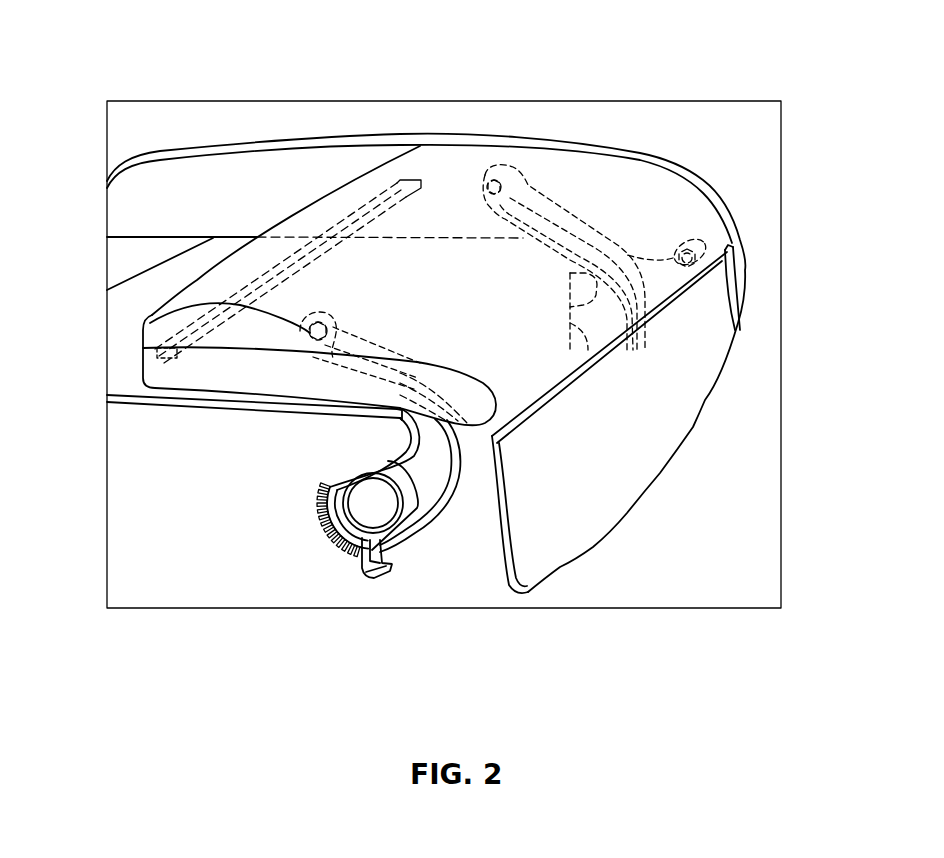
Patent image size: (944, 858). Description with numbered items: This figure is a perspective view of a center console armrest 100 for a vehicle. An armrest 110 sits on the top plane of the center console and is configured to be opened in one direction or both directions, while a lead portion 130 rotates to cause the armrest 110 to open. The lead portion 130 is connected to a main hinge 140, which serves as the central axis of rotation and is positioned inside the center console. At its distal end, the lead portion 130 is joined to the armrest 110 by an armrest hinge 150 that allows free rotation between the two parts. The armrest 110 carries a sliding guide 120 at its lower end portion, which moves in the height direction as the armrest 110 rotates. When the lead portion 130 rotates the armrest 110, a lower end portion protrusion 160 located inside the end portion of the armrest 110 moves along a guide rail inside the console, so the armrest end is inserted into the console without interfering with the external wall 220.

The center console armrest 100 is at (286, 84).
The armrest 110 is at (445, 162).
The sliding guide 120 is at (152, 321).
The lead portion 130 is at (424, 488).
The main hinge 140 is at (377, 522).
The armrest hinge 150 is at (402, 180).
The lower end portion protrusion 160 is at (700, 242).
The external wall 220 is at (700, 363).